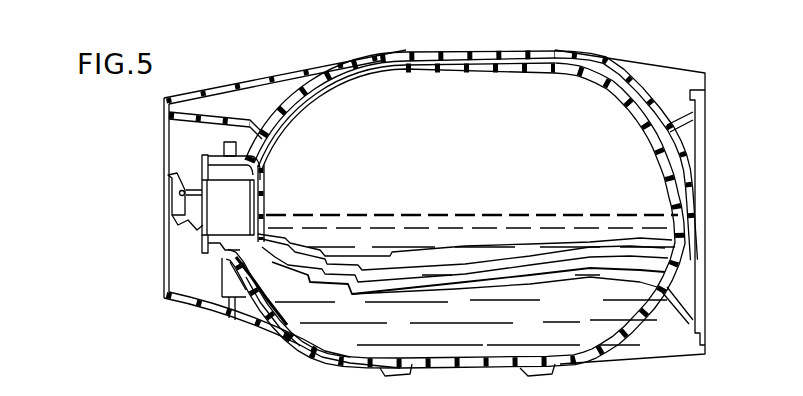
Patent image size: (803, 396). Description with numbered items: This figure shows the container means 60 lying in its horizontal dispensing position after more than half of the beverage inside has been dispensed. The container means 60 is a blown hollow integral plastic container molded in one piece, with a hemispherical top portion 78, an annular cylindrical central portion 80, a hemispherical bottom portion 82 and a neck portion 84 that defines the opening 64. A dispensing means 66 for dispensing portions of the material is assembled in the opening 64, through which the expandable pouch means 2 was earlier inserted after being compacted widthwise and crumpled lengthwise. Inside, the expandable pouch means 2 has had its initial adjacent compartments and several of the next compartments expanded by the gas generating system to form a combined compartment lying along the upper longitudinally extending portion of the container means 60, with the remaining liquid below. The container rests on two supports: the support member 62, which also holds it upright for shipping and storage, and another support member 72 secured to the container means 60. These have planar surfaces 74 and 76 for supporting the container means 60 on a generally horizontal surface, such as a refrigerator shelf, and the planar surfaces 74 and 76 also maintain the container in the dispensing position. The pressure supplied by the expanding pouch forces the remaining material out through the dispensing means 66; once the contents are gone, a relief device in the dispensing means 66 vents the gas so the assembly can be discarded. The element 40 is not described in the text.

The container means 60 is at (428, 49).
The expandable pouch means 2 is at (489, 58).
The annular cylindrical central portion 80 is at (517, 50).
The hemispherical bottom portion 82 is at (629, 82).
The hemispherical top portion 78 is at (297, 95).
The neck portion 84 is at (226, 160).
The opening 64 is at (218, 175).
The dispensing means 66 is at (161, 221).
The support member 72 is at (304, 352).
The planar surface 76 is at (400, 373).
The liner bag 40 is at (475, 368).
The planar surface 74 is at (538, 371).
The support member 62 is at (661, 358).